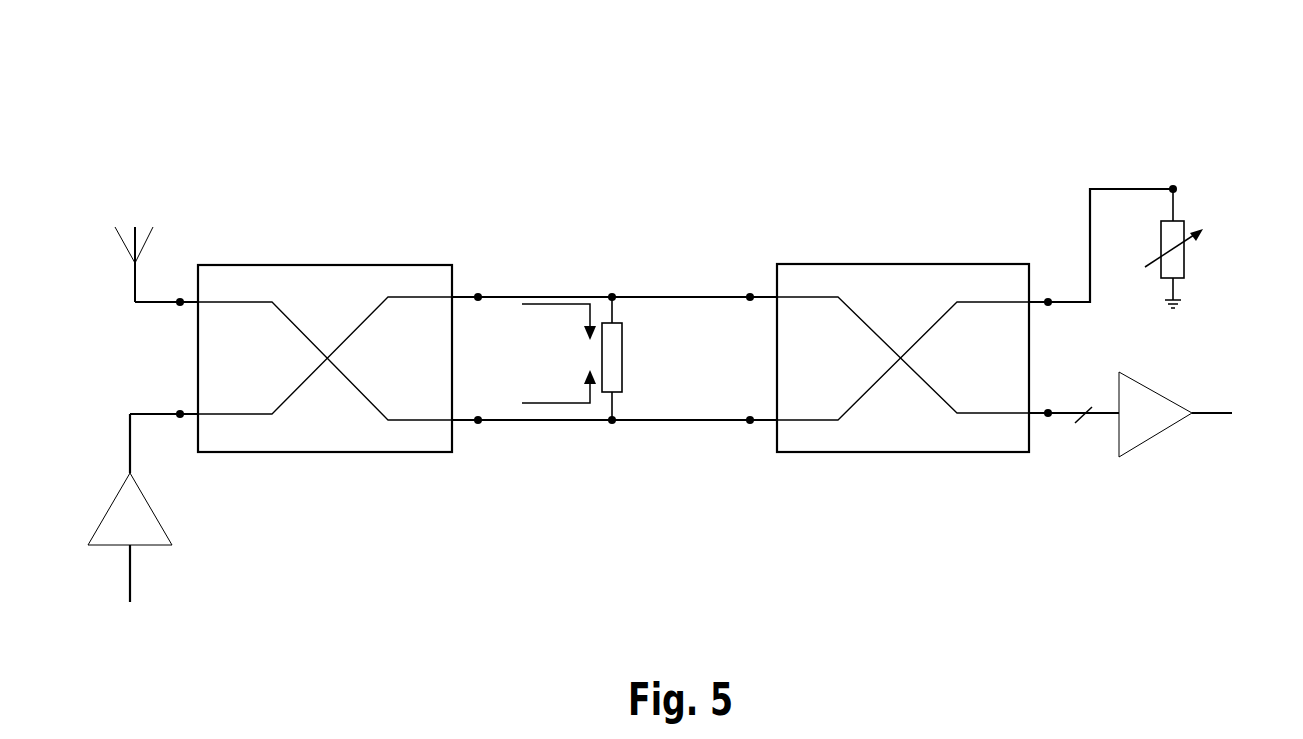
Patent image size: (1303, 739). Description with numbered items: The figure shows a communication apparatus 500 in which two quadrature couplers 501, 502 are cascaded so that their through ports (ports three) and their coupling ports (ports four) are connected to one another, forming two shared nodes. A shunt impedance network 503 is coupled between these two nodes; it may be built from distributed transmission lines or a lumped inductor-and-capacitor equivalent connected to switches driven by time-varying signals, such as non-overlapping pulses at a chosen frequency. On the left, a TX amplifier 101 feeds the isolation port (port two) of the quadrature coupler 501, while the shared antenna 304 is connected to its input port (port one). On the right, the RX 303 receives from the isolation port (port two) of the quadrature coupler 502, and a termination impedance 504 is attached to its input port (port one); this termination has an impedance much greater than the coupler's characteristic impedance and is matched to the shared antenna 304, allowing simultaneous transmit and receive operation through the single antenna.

The communication apparatus 500 is at (100, 122).
The shared antenna 304 is at (136, 235).
The quadrature coupler 501 is at (285, 265).
The quadrature coupler 502 is at (860, 264).
The shunt impedance network 503 is at (612, 365).
The termination impedance 504 is at (1168, 270).
The RX 303 is at (1137, 428).
The transmit amplifier 101 is at (157, 518).